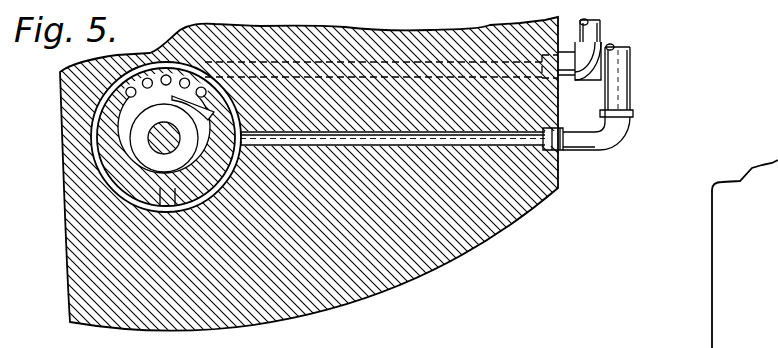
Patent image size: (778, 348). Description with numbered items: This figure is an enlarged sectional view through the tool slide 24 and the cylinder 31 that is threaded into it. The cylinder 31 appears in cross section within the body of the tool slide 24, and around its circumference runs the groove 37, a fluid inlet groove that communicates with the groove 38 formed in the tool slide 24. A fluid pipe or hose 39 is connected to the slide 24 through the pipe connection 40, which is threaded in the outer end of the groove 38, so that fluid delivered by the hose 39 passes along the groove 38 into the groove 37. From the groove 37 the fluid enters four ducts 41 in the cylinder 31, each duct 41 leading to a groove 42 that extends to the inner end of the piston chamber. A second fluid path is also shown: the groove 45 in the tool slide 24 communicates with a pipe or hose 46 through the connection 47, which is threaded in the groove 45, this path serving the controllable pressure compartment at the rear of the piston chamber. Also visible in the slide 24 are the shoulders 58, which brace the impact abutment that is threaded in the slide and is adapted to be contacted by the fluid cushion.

The tool slide 24 is at (513, 207).
The cylinder 31 is at (198, 188).
The groove 37 is at (91, 152).
The groove 38 is at (385, 141).
The fluid pipe or hose 39 is at (620, 85).
The pipe connection 40 is at (632, 122).
The ducts 41 is at (208, 87).
The groove 42 is at (228, 117).
The groove 45 is at (390, 72).
The pipe or hose 46 is at (598, 30).
The connection 47 is at (588, 58).
The shoulders 58 is at (157, 160).